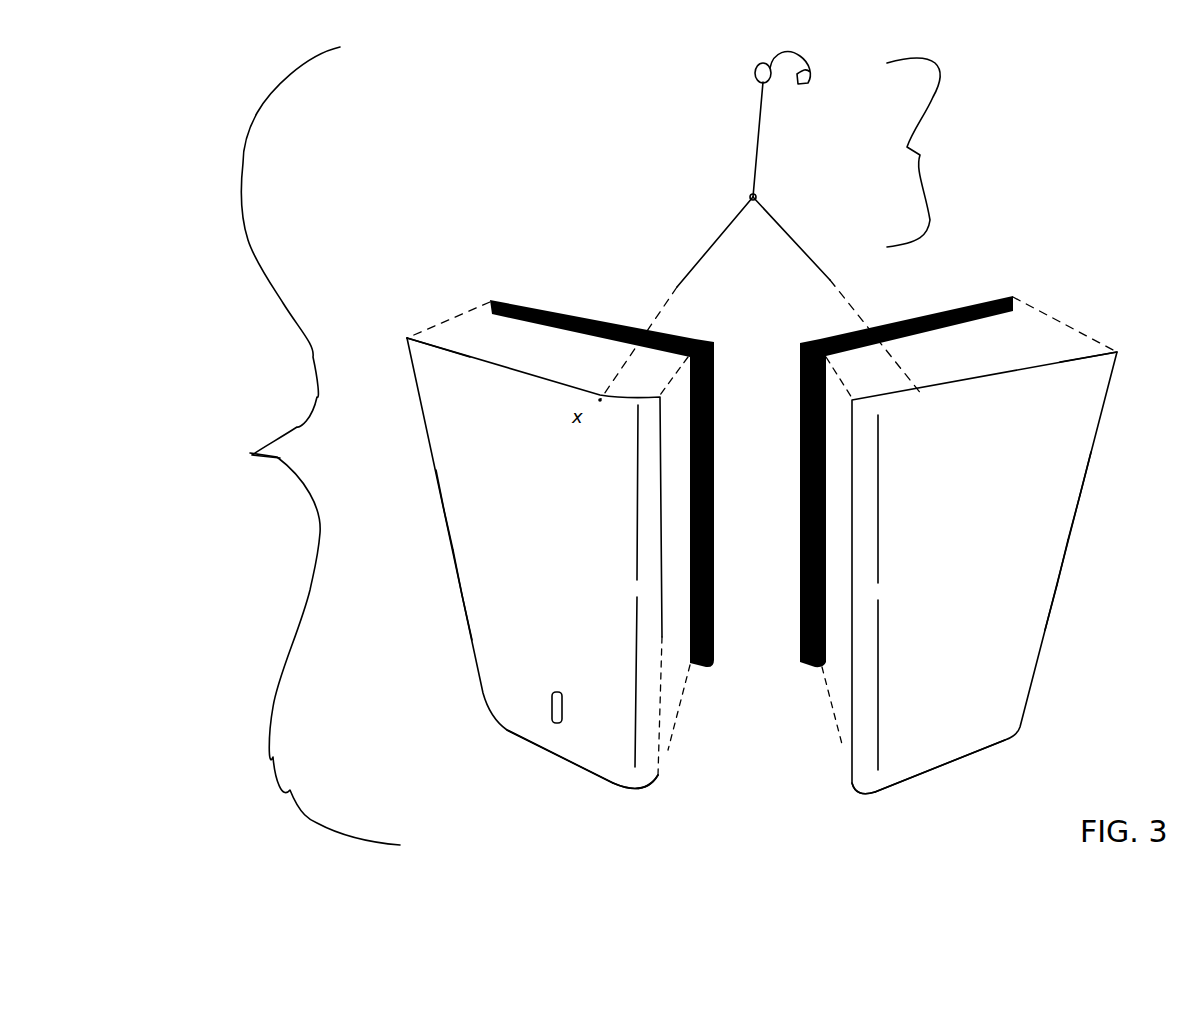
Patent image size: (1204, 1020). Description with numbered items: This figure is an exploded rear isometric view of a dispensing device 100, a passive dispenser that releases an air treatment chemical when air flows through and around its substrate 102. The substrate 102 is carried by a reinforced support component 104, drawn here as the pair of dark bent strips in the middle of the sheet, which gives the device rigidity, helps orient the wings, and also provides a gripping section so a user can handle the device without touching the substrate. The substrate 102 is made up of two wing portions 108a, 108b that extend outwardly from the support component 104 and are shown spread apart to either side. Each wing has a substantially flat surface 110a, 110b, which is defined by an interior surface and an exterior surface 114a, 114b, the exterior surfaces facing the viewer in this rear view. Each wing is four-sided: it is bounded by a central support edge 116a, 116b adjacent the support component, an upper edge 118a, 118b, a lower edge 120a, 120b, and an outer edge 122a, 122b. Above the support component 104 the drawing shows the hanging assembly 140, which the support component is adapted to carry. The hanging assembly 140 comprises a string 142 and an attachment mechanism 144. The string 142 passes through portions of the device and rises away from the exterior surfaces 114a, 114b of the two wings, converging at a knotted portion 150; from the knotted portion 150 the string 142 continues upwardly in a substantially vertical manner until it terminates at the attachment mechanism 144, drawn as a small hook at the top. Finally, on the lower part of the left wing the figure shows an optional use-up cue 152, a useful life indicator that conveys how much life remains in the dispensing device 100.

The dispensing device 100 is at (283, 446).
The substrate 102 is at (1087, 417).
The support component 104 is at (713, 358).
The wing portion 108a is at (457, 483).
The wing portion 108b is at (1063, 532).
The substantially flat surface 110a is at (470, 528).
The substantially flat surface 110b is at (1047, 570).
The exterior surface 114a is at (487, 582).
The exterior surface 114b is at (1073, 477).
The central support edge 116a is at (662, 635).
The central support edge 116b is at (850, 653).
The upper edge 118a is at (455, 343).
The upper edge 118b is at (1050, 360).
The lower edge 120a is at (580, 773).
The lower edge 120b is at (953, 763).
The outer edge 122a is at (472, 635).
The outer edge 122b is at (1047, 633).
The hanging assembly 140 is at (934, 152).
The string 142 is at (717, 238).
The attachment mechanism 144 is at (812, 72).
The knotted portion 150 is at (757, 195).
The use-up cue 152 is at (553, 722).